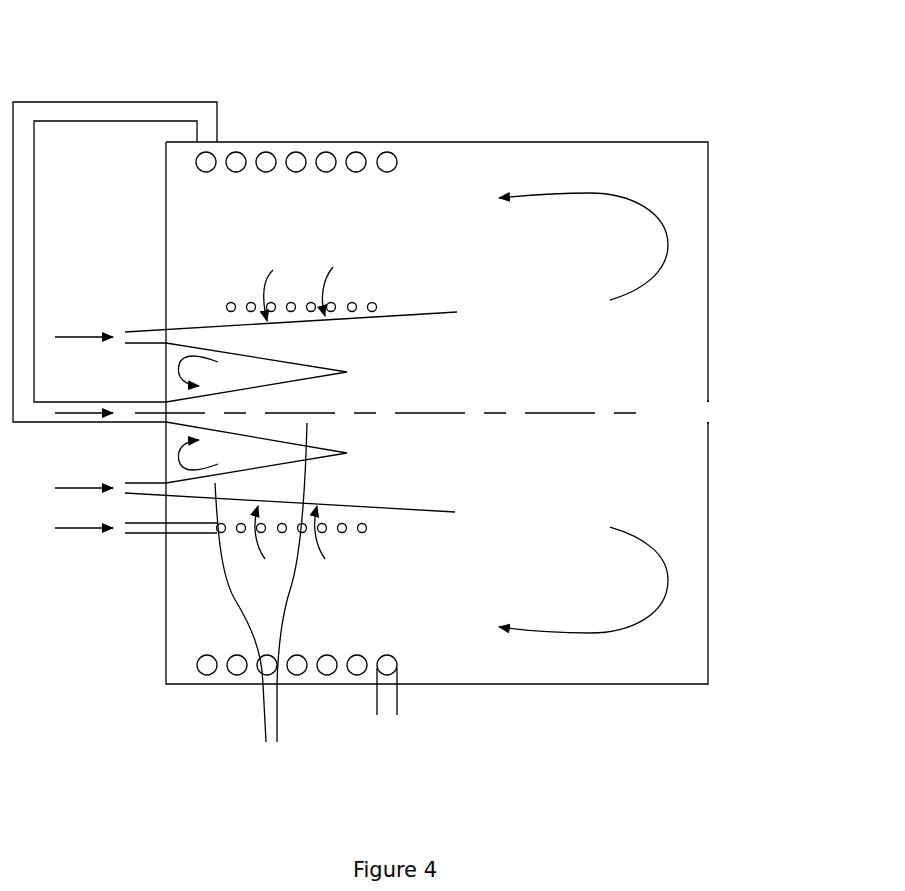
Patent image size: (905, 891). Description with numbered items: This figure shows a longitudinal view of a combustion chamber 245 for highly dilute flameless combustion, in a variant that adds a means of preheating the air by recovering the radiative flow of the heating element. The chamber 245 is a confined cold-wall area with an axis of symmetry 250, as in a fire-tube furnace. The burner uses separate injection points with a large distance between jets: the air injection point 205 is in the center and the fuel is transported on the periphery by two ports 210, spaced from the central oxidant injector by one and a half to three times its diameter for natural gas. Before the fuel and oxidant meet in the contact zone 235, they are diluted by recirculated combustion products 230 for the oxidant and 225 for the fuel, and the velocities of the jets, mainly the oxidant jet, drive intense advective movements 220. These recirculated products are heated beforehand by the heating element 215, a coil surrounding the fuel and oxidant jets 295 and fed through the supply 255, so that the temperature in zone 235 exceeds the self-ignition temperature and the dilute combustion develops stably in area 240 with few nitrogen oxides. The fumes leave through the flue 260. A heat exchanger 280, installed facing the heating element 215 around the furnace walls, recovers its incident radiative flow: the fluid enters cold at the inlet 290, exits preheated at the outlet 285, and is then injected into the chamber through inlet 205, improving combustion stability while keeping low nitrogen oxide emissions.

The air injection point 205 is at (146, 410).
The fuel ports 210 is at (146, 334).
The heating element 215 is at (352, 303).
The advective movements 220 is at (587, 192).
The recirculated combustion products for the fuel 225 is at (263, 296).
The recirculated combustion products for the oxidant 230 is at (187, 352).
The contact zone 235 is at (357, 452).
The dilute combustion area 240 is at (416, 373).
The combustion chamber 245 is at (526, 141).
The axis of symmetry 250 is at (552, 413).
The supply of the heating element 255 is at (147, 529).
The flue 260 is at (707, 413).
The heat exchanger 280 is at (356, 158).
The exchanger outlet 285 is at (24, 112).
The exchanger inlet 290 is at (387, 717).
The fuel and oxidant jets 295 is at (261, 600).